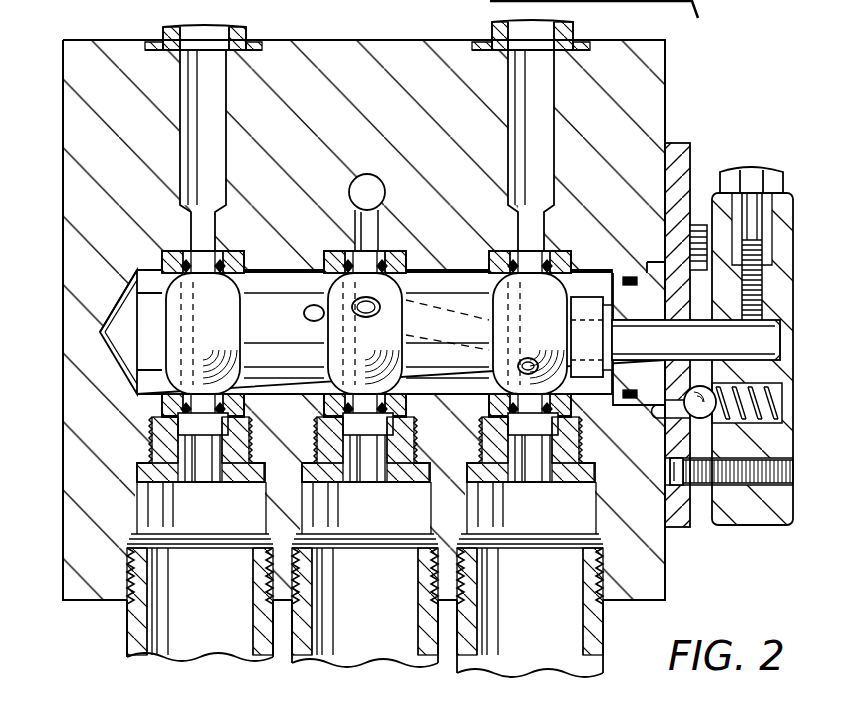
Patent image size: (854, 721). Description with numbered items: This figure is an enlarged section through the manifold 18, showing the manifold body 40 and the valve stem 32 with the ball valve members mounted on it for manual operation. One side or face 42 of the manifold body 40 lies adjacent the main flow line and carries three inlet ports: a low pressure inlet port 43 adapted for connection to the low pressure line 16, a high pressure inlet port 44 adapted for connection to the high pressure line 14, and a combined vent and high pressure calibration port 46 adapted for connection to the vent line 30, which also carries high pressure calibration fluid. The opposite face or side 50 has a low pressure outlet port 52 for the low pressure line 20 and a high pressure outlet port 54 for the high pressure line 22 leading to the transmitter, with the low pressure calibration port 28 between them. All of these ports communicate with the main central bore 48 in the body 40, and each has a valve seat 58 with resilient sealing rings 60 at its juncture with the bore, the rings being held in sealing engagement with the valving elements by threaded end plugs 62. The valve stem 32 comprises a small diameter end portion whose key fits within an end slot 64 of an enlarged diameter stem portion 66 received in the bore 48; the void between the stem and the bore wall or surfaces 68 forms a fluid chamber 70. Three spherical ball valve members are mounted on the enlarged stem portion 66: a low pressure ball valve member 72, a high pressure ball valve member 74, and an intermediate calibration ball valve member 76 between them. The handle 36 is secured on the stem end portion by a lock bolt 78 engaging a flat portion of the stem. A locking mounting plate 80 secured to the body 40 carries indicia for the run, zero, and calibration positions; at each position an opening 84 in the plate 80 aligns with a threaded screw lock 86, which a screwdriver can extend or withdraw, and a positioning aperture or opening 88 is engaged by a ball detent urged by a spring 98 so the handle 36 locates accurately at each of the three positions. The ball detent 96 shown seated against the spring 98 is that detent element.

The high pressure line 14 is at (600, 618).
The low pressure line 16 is at (127, 637).
The manifold 18 is at (58, 192).
The low pressure line 20 is at (163, 42).
The high pressure line 22 is at (492, 42).
The low pressure calibration port 28 is at (385, 194).
The vent line 30 is at (412, 635).
The valve stem 32 is at (640, 347).
The handle 36 is at (770, 534).
The manifold body 40 is at (86, 132).
The side or face 42 is at (85, 598).
The low pressure inlet port 43 is at (140, 508).
The high pressure inlet port 44 is at (594, 518).
The combined vent and high pressure calibration port 46 is at (425, 498).
The main central bore 48 is at (431, 284).
The opposite face or side 50 is at (76, 40).
The low pressure outlet port 52 is at (183, 135).
The high pressure outlet port 54 is at (548, 120).
The valve seat 58 is at (238, 250).
The resilient sealing rings 60 is at (328, 284).
The threaded end plugs 62 is at (700, 348).
The end slot 64 is at (615, 262).
The enlarged diameter stem portion 66 is at (296, 341).
The bore wall or surfaces 68 is at (588, 275).
The fluid chamber 70 is at (145, 365).
The low pressure ball valve member 72 is at (242, 308).
The high pressure ball valve member 74 is at (503, 316).
The intermediate calibration ball valve member 76 is at (397, 306).
The lock bolt 78 is at (750, 180).
The locking mounting plate 80 is at (680, 145).
The opening 84 is at (662, 476).
The threaded screw lock 86 is at (698, 487).
The positioning aperture or opening 88 is at (652, 418).
The detent ball 96 is at (698, 418).
The spring 98 is at (745, 385).